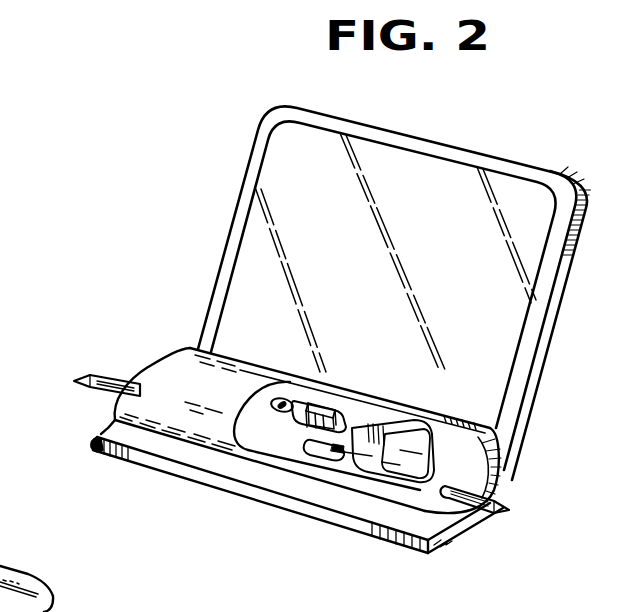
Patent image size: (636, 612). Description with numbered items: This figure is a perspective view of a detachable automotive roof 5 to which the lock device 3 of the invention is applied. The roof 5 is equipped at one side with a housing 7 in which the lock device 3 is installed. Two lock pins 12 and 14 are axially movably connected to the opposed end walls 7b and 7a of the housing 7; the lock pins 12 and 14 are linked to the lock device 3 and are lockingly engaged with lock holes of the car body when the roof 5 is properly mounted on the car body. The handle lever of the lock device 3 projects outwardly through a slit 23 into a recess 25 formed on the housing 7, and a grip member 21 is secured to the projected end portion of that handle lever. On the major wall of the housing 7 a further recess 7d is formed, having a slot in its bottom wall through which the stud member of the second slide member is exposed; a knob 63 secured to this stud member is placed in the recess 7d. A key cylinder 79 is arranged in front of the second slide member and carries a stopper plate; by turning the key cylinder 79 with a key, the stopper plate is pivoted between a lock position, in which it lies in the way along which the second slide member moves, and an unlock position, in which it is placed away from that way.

The lock device 3 is at (151, 436).
The detachable roof 5 is at (551, 333).
The housing 7 is at (183, 437).
The end wall 7a is at (157, 365).
The end wall 7b is at (480, 459).
The recess 7d is at (337, 400).
The lock pin 12 is at (518, 492).
The lock pin 14 is at (95, 376).
The grip member 21 is at (357, 442).
The slit 23 is at (318, 449).
The recess 25 is at (462, 415).
The knob 63 is at (318, 405).
The key cylinder 79 is at (282, 398).